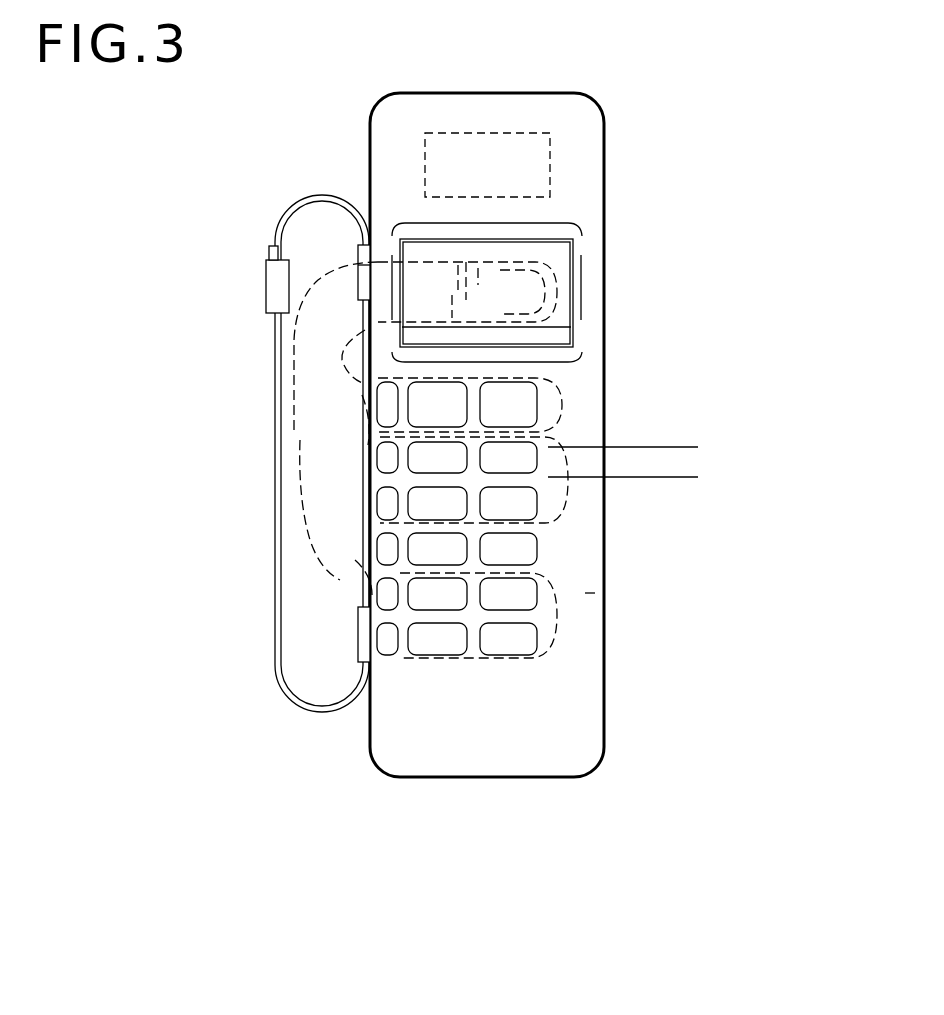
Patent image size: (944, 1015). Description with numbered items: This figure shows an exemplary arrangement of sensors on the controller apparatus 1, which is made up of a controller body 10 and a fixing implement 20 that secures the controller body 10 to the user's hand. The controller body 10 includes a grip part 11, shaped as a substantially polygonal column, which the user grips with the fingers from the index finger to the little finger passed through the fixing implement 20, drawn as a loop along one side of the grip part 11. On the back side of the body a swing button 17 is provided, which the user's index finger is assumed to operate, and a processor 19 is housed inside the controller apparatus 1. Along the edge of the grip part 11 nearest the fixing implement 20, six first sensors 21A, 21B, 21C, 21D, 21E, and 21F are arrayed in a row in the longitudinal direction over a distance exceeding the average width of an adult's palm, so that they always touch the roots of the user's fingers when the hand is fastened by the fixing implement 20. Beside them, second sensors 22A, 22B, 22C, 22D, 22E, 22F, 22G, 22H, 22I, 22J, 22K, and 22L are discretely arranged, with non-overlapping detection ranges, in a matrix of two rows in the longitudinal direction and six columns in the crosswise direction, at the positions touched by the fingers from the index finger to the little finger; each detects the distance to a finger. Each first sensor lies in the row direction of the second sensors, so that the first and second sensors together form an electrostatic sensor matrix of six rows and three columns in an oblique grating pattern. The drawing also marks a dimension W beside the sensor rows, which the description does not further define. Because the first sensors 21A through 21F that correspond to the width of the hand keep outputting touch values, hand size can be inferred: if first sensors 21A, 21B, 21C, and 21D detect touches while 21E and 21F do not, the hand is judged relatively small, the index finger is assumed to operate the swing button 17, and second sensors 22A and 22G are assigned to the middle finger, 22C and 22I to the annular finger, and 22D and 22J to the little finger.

The controller apparatus 1 is at (608, 812).
The controller body 10 is at (640, 180).
The grip part 11 is at (580, 593).
The swing button 17 is at (565, 300).
The processor 19 is at (487, 165).
The fixing implement 20 is at (298, 200).
The first sensor 21A is at (380, 400).
The first sensor 21B is at (380, 455).
The first sensor 21C is at (380, 502).
The first sensor 21D is at (380, 548).
The first sensor 21E is at (380, 593).
The first sensor 21F is at (380, 638).
The second sensor 22A is at (437, 404).
The second sensor 22B is at (437, 457).
The second sensor 22C is at (437, 503).
The second sensor 22D is at (437, 549).
The second sensor 22E is at (437, 594).
The second sensor 22F is at (437, 639).
The second sensor 22G is at (508, 404).
The second sensor 22H is at (508, 457).
The second sensor 22I is at (508, 503).
The second sensor 22J is at (508, 549).
The second sensor 22K is at (508, 594).
The second sensor 22L is at (508, 639).
The key row width W is at (683, 395).